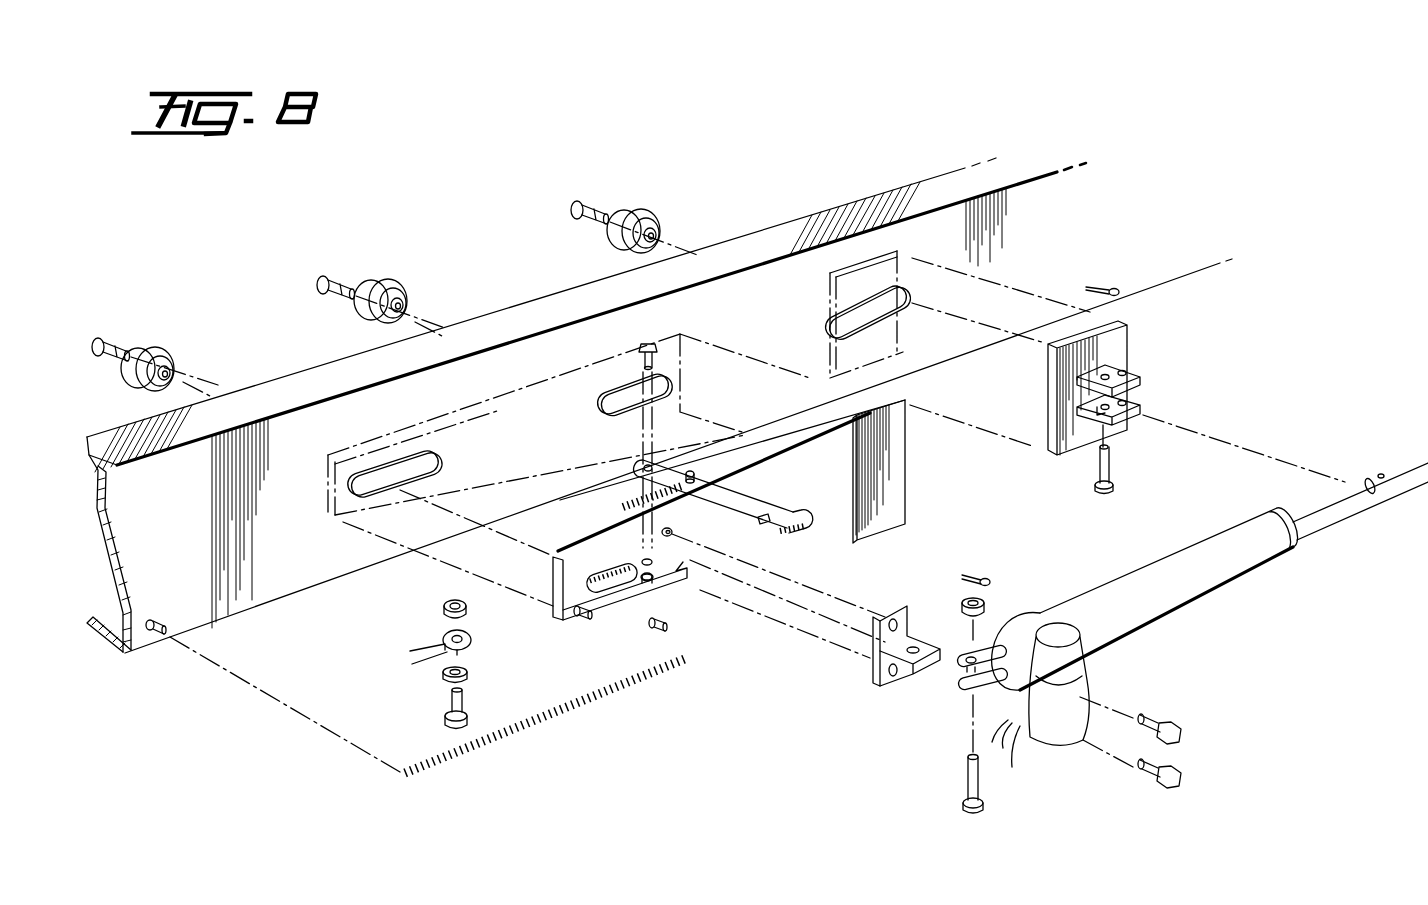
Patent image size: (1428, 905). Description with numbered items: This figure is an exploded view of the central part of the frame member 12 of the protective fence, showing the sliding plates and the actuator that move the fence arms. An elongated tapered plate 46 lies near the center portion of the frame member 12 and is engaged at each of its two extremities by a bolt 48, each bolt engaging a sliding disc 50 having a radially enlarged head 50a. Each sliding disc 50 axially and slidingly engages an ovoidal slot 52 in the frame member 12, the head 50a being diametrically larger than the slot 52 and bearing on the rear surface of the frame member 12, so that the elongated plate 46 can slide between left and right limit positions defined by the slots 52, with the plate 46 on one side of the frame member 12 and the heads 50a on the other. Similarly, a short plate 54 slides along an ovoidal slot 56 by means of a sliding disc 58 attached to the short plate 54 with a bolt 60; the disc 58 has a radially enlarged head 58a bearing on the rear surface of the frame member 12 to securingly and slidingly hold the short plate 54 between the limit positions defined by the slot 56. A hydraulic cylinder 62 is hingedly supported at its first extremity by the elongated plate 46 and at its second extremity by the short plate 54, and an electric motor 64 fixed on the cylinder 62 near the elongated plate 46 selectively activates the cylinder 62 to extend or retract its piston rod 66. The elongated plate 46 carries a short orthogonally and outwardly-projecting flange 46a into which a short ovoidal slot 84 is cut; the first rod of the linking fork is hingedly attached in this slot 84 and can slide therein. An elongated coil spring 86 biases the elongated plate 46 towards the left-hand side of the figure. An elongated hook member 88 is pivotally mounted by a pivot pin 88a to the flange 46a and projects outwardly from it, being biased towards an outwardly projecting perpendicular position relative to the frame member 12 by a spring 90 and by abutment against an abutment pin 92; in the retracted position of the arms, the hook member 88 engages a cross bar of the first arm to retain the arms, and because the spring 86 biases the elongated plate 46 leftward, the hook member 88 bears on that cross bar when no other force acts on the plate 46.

The frame member 12 is at (917, 190).
The elongated tapered plate 46 is at (893, 475).
The flange 46a is at (680, 562).
The bolt 48 is at (330, 286).
The sliding disc 50 is at (404, 275).
The radially enlarged head 50a is at (380, 314).
The ovoidal slot 52 is at (603, 392).
The short plate 54 is at (1113, 343).
The ovoidal slot 56 is at (873, 318).
The sliding disc 58 is at (651, 216).
The radially enlarged head 58a is at (662, 226).
The bolt 60 is at (585, 204).
The hydraulic cylinder 62 is at (1190, 575).
The electric motor 64 is at (1067, 662).
The piston rod 66 is at (1332, 505).
The short ovoidal slot 84 is at (600, 577).
The elongated coil spring 86 is at (560, 718).
The elongated hook member 88 is at (800, 513).
The pivot pin 88a is at (646, 340).
The spring 90 is at (632, 503).
The abutment pin 92 is at (652, 579).